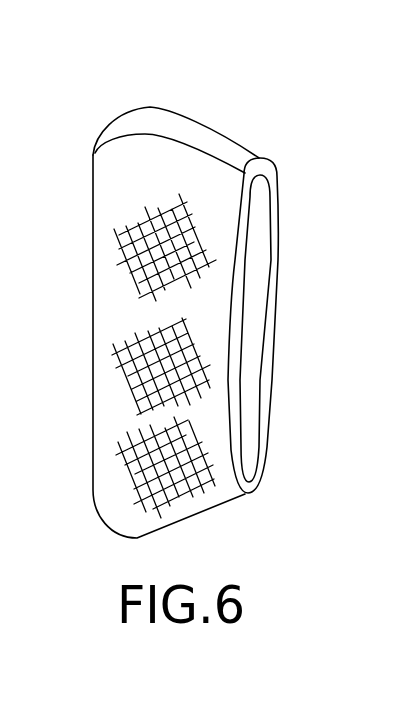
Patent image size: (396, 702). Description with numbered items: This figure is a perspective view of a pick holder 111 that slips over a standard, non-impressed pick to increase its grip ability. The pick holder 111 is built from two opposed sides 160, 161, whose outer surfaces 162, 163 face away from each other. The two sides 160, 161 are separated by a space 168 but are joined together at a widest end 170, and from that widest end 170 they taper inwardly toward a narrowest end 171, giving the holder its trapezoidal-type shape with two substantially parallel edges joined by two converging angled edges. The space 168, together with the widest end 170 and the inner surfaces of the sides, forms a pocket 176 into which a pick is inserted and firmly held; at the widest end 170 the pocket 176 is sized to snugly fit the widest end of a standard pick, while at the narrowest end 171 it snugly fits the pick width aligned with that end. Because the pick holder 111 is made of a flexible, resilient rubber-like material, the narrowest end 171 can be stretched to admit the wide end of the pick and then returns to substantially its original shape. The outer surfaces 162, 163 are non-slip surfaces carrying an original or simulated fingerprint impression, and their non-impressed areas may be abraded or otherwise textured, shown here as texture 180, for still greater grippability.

The pick holder 111 is at (246, 96).
The side 160 is at (112, 200).
The side 161 is at (250, 148).
The outer surface 162 is at (122, 315).
The outer surface 163 is at (165, 112).
The space 168 is at (252, 370).
The widest end 170 is at (105, 132).
The narrowest end 171 is at (278, 231).
The pocket 176 is at (263, 325).
The texture 180 is at (154, 478).